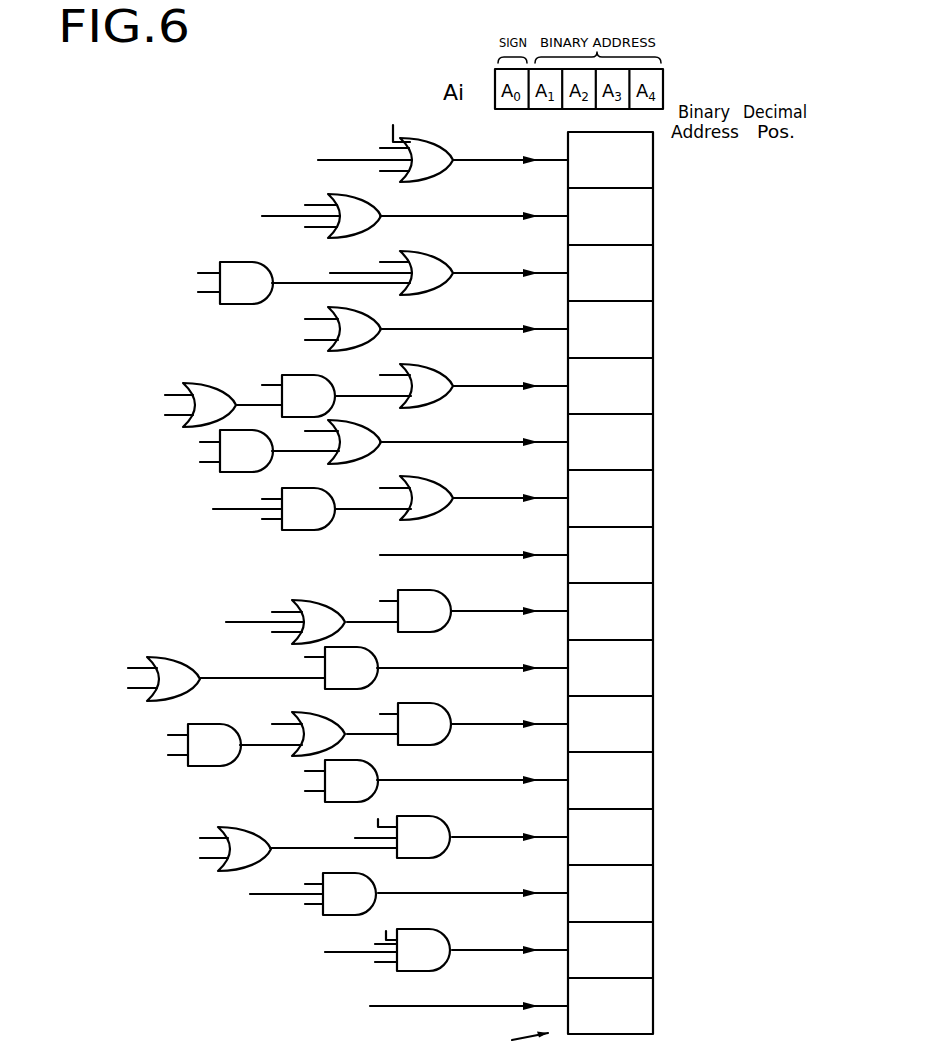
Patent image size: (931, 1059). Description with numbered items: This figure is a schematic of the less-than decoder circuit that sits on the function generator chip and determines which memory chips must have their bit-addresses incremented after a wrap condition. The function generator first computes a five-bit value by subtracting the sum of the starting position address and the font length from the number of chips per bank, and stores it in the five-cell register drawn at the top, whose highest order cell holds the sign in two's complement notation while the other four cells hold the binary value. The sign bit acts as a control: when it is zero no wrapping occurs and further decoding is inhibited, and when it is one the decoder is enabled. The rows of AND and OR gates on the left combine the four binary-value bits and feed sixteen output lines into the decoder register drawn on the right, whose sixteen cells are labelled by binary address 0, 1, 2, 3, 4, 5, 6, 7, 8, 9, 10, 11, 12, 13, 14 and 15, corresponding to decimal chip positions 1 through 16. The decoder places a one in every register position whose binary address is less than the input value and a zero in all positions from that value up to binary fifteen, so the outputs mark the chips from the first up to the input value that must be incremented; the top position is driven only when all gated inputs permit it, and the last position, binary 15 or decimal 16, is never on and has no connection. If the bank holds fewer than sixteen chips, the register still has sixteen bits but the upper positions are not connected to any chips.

The decoder register cell 0000 (binary address 0) and its gating logic 0 is at (527, 141).
The decoder register cell 0001 (binary address 1) and its gating logic 1 is at (502, 216).
The decoder register cell 0010 (binary address 2) and its gating logic 2 is at (473, 277).
The decoder register cell 0011 (binary address 3) and its gating logic 3 is at (525, 329).
The decoder register cell 0100 (binary address 4) and its gating logic 4 is at (454, 395).
The decoder register cell 0101 (binary address 5) and its gating logic 5 is at (473, 446).
The decoder register cell 0110 (binary address 6) and its gating logic 6 is at (479, 503).
The decoder register cell 0111 (binary address 7) and its gating logic 7 is at (562, 555).
The decoder register cell 1000 (binary address 8) and its gating logic 8 is at (484, 617).
The decoder register cell 1001 (binary address 9) and its gating logic 9 is at (440, 674).
The decoder register cell 1010 (binary address 10) and its gating logic 10 is at (460, 734).
The decoder register cell 1011 (binary address 11) and its gating logic 11 is at (529, 781).
The decoder register cell 1100 (binary address 12) and its gating logic 12 is at (476, 836).
The decoder register cell 1101 (binary address 13) and its gating logic 13 is at (501, 893).
The decoder register cell 1110 (binary address 14) and its gating logic 14 is at (538, 942).
The decoder register cell 1111 (binary address 15, no connection) 15 is at (400, 1007).
The decoder register (decimal position 16) 16 is at (518, 592).